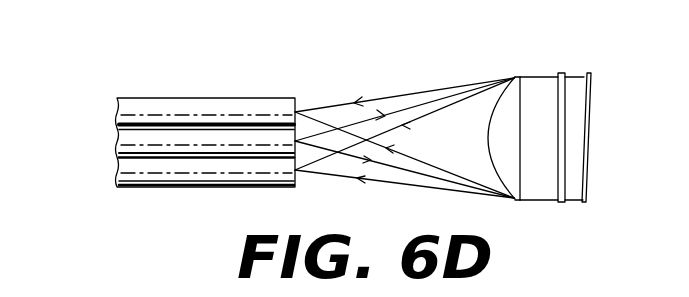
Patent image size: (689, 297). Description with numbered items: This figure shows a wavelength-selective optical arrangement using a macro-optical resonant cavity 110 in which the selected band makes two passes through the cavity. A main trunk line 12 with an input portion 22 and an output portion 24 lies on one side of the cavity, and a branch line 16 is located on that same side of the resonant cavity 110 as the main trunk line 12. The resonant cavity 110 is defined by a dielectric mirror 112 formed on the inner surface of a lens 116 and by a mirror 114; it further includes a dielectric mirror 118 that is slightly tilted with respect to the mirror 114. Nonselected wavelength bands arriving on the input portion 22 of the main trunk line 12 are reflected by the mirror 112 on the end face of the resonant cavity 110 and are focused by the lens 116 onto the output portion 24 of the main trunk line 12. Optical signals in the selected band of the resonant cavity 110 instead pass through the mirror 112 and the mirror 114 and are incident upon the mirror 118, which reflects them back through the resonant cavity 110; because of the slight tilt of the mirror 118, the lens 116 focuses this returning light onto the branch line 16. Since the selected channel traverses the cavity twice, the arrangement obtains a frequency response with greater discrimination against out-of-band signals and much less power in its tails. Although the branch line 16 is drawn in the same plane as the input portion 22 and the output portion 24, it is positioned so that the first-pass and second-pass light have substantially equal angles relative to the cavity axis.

The main trunk line 12 is at (90, 177).
The branch line 16 is at (213, 97).
The input portion 22 is at (117, 135).
The output portion 24 is at (193, 188).
The resonant cavity 110 is at (541, 112).
The dielectric mirror 112 is at (482, 122).
The mirror 114 is at (553, 79).
The lens 116 is at (489, 138).
The dielectric mirror 118 is at (592, 106).